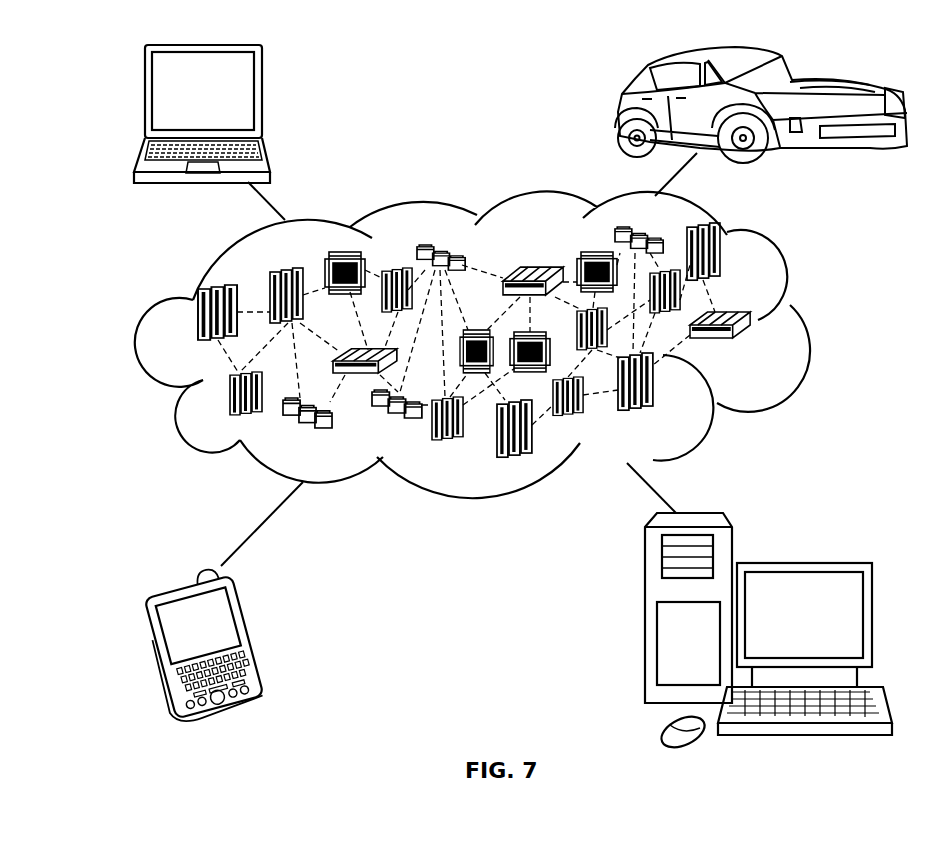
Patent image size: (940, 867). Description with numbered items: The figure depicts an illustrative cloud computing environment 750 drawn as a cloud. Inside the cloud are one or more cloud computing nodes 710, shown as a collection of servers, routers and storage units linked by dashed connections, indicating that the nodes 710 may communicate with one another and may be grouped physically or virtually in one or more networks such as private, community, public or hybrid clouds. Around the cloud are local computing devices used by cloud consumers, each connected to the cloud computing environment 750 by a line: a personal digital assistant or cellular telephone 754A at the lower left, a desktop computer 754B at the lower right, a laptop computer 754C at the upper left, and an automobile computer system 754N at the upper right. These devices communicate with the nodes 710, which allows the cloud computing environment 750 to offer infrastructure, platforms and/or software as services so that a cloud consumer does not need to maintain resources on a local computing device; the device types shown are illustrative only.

The cloud computing nodes 710 is at (752, 348).
The cloud computing environment 750 is at (807, 322).
The personal digital assistant (PDA) or cellular telephone 754A is at (253, 643).
The desktop computer 754B is at (802, 562).
The laptop computer 754C is at (262, 98).
The automobile computer system 754N is at (620, 110).